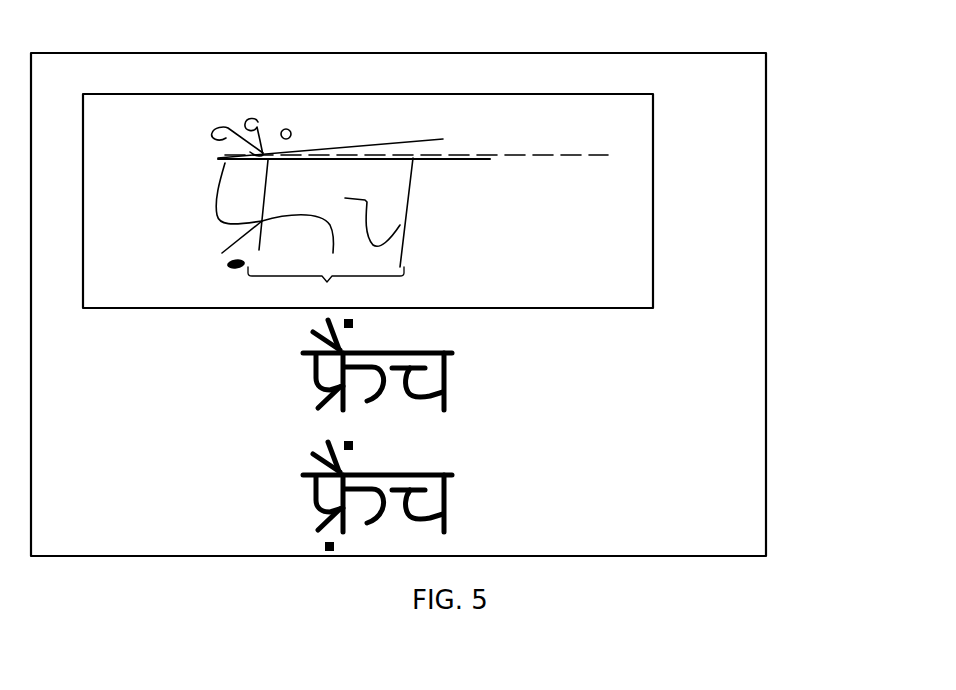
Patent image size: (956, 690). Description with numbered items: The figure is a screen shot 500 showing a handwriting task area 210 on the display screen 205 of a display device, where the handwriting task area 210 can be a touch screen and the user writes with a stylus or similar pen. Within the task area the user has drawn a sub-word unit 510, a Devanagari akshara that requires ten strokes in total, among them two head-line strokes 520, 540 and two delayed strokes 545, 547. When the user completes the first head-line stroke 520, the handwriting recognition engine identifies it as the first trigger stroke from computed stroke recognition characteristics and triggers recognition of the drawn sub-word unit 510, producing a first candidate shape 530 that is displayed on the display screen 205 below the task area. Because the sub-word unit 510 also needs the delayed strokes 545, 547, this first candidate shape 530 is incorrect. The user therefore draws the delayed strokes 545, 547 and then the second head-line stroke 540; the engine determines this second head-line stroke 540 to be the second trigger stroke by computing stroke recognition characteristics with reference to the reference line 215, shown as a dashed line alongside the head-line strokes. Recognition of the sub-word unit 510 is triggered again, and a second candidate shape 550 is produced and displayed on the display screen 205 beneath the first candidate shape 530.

The screen shot 500 is at (204, 40).
The display screen 205 is at (767, 208).
The handwriting task area 210 is at (653, 214).
The reference line 215 is at (537, 157).
The drawn sub-word unit 510 is at (375, 278).
The first head-line stroke 520 is at (486, 155).
The first candidate shape 530 is at (470, 377).
The second head-line stroke 540 is at (428, 141).
The delayed stroke 545 is at (291, 130).
The delayed stroke 547 is at (226, 266).
The second candidate shape 550 is at (470, 479).